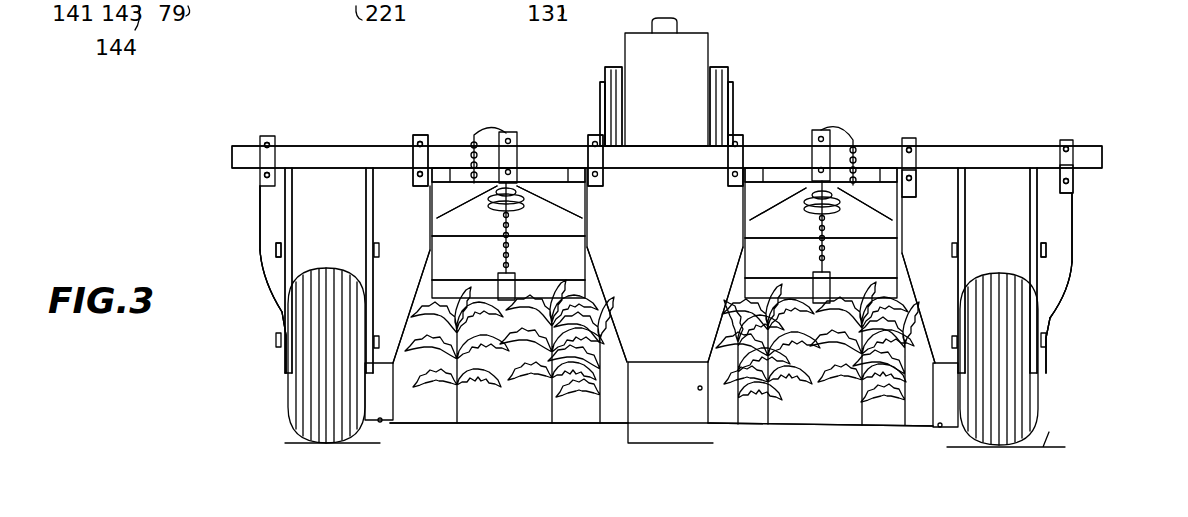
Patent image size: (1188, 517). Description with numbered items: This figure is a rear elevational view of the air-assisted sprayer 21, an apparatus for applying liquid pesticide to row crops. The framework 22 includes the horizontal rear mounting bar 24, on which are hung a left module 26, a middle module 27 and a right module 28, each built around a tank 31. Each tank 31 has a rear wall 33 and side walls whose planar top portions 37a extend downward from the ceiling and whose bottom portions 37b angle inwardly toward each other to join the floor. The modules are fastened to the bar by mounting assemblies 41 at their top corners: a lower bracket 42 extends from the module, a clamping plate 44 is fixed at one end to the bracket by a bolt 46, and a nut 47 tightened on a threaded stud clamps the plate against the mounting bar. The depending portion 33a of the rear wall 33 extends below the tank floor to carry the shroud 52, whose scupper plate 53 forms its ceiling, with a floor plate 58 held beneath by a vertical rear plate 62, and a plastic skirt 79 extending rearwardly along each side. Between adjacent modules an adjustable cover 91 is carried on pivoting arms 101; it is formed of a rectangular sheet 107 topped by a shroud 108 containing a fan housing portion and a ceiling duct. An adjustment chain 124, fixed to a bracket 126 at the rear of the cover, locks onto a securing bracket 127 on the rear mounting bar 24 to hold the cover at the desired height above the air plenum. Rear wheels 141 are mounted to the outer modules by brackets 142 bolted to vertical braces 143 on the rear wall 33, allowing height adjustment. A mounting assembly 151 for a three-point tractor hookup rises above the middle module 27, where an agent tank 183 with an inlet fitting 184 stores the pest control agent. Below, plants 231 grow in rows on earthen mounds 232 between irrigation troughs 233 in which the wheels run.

The sprayer 21 is at (1020, 114).
The framework 22 is at (738, 110).
The rear mounting bar 24 is at (1102, 160).
The left module 26 is at (259, 206).
The middle module 27 is at (685, 217).
The right module 28 is at (1078, 230).
The tank 31 is at (268, 282).
The rear wall 33 is at (270, 257).
The depending portion of rear wall 33a is at (627, 368).
The top portions of side walls 37a is at (260, 222).
The bottom portions of side walls 37b is at (270, 295).
The mounting assembly 41 is at (262, 138).
The lower bracket 42 is at (906, 196).
The clamping plate 44 is at (270, 158).
The bolt 46 is at (910, 138).
The nut 47 is at (915, 153).
The shroud 52 is at (382, 430).
The scupper plate 53 is at (930, 380).
The floor plate 58 is at (666, 423).
The rear plate 62 is at (380, 425).
The skirt 79 is at (700, 390).
The cover 91 is at (478, 135).
The arms 101 is at (452, 180).
The sheet 107 is at (577, 198).
The shroud 108 is at (525, 248).
The adjustment chain 124 is at (472, 130).
The bracket 126 is at (498, 283).
The securing bracket 127 is at (818, 130).
The rear wheels 141 is at (288, 392).
The brackets 142 is at (380, 240).
The braces 143 is at (360, 197).
The mounting assembly 151 is at (730, 68).
The agent tank 183 is at (695, 40).
The inlet fitting 184 is at (652, 24).
The plants 231 is at (918, 305).
The earthen mounds 232 is at (525, 425).
The irrigation troughs 233 is at (290, 443).